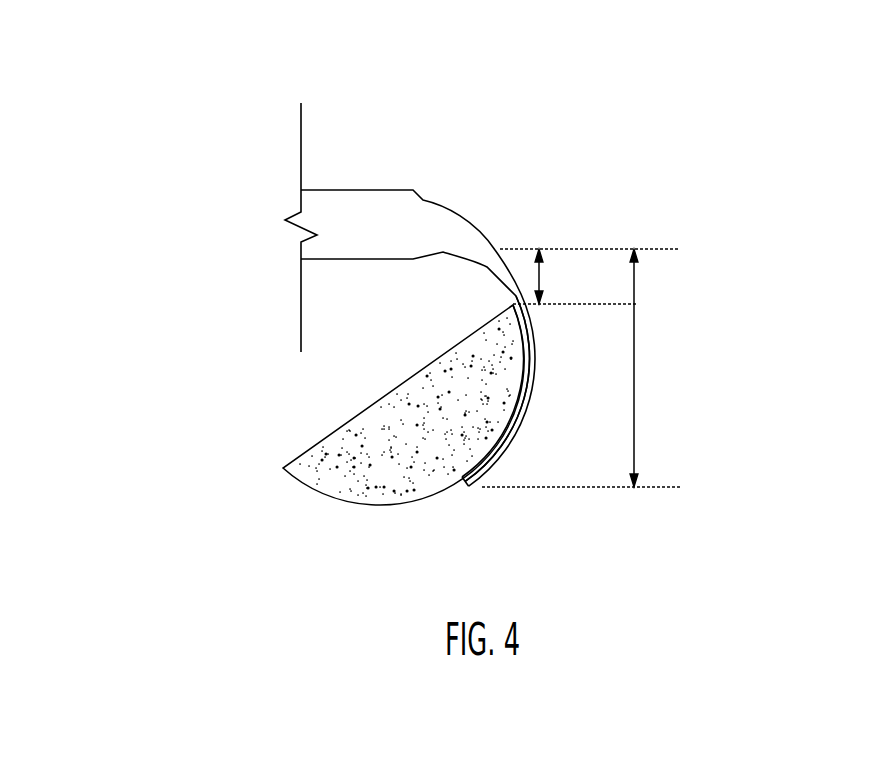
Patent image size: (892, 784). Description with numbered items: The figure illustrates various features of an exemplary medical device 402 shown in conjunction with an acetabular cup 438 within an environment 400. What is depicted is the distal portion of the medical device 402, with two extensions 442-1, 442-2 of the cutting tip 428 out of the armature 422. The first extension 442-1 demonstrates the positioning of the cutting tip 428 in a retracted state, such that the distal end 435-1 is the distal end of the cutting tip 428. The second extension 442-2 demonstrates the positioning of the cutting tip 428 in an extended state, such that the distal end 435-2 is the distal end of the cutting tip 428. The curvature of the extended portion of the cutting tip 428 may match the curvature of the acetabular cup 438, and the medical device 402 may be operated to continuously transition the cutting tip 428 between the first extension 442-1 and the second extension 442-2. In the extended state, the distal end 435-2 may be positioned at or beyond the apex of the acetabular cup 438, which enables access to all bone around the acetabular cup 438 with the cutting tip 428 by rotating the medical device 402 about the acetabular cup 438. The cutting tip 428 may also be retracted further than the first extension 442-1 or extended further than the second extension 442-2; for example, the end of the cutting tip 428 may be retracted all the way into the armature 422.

The environment 400 is at (492, 30).
The medical device 402 is at (280, 62).
The armature 422 is at (325, 190).
The cutting tip 428 is at (512, 305).
The acetabular cup 438 is at (389, 392).
The distal end 435-1 is at (637, 304).
The distal end 435-2 is at (469, 482).
The extension 442-1 is at (615, 260).
The extension 442-2 is at (632, 368).